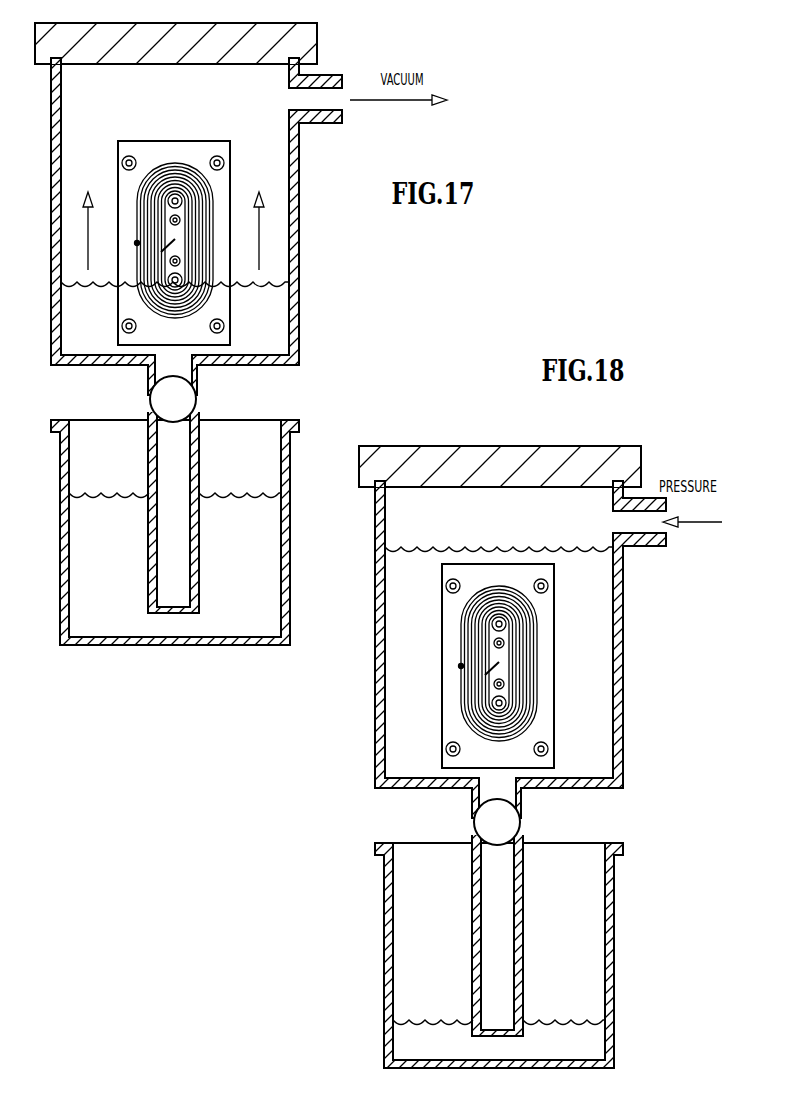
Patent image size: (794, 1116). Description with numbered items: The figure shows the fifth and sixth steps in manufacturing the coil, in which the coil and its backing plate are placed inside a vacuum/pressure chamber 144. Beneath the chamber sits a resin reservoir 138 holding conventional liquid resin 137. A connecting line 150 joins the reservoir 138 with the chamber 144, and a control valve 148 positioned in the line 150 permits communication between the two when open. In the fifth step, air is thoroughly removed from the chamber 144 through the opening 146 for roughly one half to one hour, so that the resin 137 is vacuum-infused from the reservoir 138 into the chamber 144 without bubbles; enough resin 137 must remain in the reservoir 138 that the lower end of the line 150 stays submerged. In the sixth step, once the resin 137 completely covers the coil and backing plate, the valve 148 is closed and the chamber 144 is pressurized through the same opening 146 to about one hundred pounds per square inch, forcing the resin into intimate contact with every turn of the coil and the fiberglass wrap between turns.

In FIG. 17, the liquid resin 137 is at (100, 567).
In FIG. 17, the resin reservoir 138 is at (285, 493).
In FIG. 18, the resin reservoir 138 is at (472, 955).
In FIG. 17, the vacuum/pressure chamber 144 is at (297, 242).
In FIG. 18, the vacuum/pressure chamber 144 is at (529, 632).
In FIG. 17, the opening 146 is at (335, 103).
In FIG. 18, the opening 146 is at (664, 536).
In FIG. 17, the control valve 148 is at (148, 395).
In FIG. 18, the control valve 148 is at (457, 822).
In FIG. 17, the connecting line 150 is at (195, 373).
In FIG. 18, the connecting line 150 is at (530, 917).